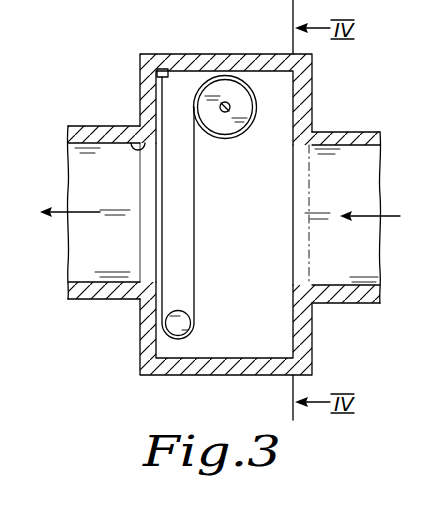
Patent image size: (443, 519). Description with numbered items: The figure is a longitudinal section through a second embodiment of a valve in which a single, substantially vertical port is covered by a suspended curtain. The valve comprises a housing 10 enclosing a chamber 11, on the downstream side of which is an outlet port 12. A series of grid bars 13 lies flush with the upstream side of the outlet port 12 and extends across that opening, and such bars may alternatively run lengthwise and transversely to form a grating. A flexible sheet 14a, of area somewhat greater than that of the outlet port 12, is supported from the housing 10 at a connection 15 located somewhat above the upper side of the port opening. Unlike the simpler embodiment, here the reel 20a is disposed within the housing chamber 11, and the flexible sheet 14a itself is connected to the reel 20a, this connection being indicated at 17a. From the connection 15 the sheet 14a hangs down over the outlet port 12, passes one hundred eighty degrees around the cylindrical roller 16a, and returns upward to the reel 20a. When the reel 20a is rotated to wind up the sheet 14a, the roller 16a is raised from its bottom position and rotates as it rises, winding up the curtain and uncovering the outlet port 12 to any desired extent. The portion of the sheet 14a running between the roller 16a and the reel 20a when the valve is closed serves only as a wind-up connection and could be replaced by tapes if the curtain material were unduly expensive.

The housing 10 is at (313, 91).
The chamber 11 is at (256, 227).
The outlet port 12 is at (139, 145).
The grid bars 13 is at (145, 181).
The flexible sheet 14a is at (196, 272).
The connection 15 is at (165, 69).
The roller 16a is at (172, 322).
The connection of the sheet to the reel 17a is at (212, 125).
The reel 20a is at (225, 88).